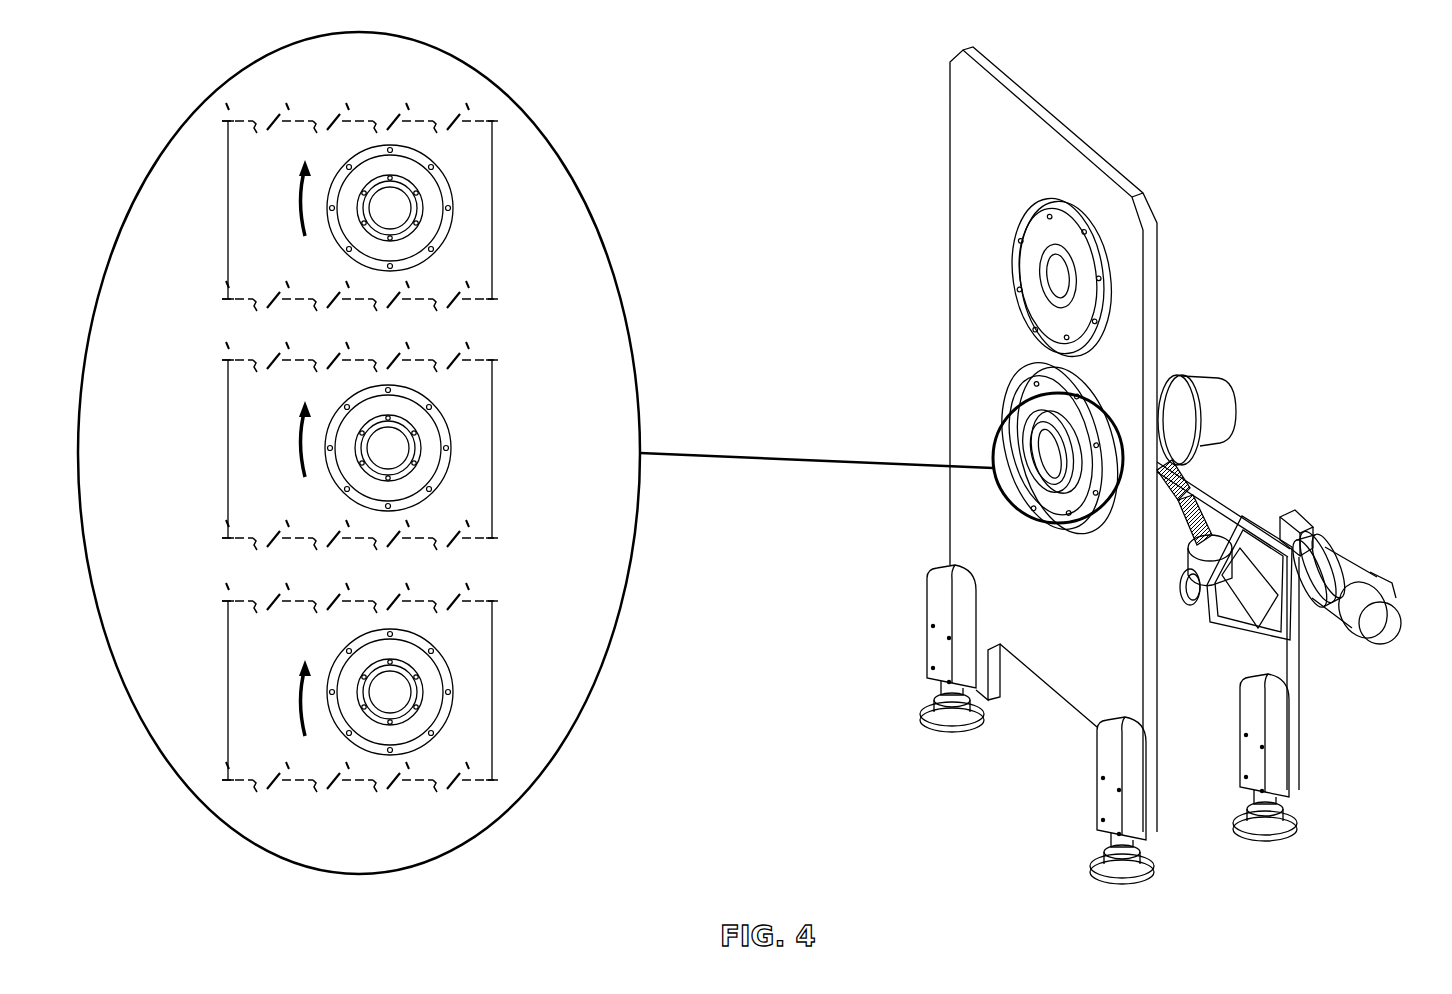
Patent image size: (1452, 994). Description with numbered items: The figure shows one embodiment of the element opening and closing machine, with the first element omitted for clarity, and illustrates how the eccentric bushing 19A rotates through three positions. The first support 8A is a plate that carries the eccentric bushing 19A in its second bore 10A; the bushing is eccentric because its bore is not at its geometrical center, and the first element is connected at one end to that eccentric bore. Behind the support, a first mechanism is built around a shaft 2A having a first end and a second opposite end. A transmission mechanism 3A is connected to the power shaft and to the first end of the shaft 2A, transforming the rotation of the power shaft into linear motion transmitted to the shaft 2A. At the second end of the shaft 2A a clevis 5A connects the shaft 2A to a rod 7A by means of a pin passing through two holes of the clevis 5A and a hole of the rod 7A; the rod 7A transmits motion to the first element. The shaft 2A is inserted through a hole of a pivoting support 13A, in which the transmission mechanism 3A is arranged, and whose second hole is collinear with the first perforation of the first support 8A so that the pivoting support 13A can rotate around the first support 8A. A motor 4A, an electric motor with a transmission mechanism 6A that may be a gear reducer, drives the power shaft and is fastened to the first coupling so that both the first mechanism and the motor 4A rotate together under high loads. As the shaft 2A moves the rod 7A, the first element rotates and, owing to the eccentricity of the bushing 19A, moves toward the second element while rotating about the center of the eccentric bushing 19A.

The second bore 10A is at (452, 195).
The first support 8A is at (268, 278).
The eccentric bushing 19A is at (420, 233).
The rod 7A is at (1200, 378).
The clevis 5A is at (1183, 500).
The transmission mechanism 3A is at (1200, 607).
The shaft 2A is at (1205, 622).
The transmission mechanism 6A is at (1318, 525).
The pivoting support 13A is at (1267, 525).
The motor 4A is at (1372, 642).